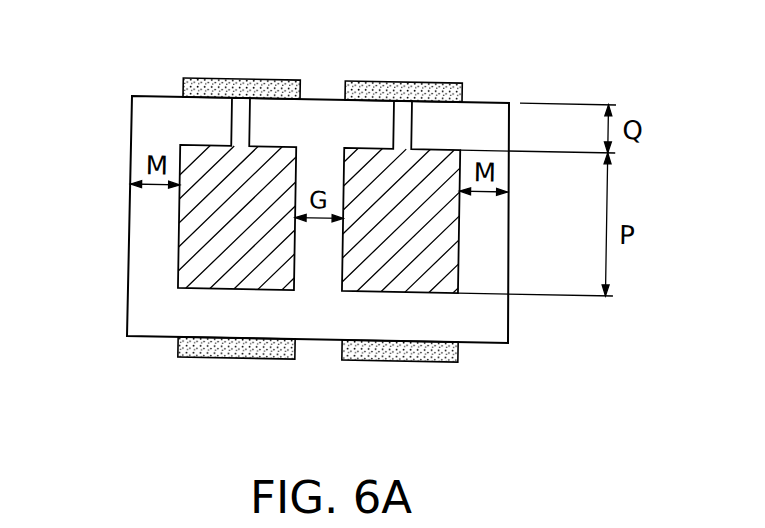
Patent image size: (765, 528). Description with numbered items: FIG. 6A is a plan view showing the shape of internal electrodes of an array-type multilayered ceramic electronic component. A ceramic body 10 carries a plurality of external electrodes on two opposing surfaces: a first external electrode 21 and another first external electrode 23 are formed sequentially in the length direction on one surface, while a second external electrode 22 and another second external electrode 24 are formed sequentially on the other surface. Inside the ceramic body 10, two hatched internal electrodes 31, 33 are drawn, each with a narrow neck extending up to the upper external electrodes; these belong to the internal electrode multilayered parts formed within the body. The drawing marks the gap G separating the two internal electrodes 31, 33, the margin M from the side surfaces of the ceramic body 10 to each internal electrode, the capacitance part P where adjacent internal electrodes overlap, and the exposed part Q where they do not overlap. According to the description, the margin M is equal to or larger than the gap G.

The ceramic body 10 is at (130, 136).
The 1-1st external electrode 21 is at (236, 76).
The 2-1st external electrode 22 is at (236, 348).
The 1-2nd external electrode 23 is at (406, 75).
The 2-2nd external electrode 24 is at (404, 345).
The first internal electrode 31 is at (200, 227).
The second internal electrode 33 is at (442, 229).